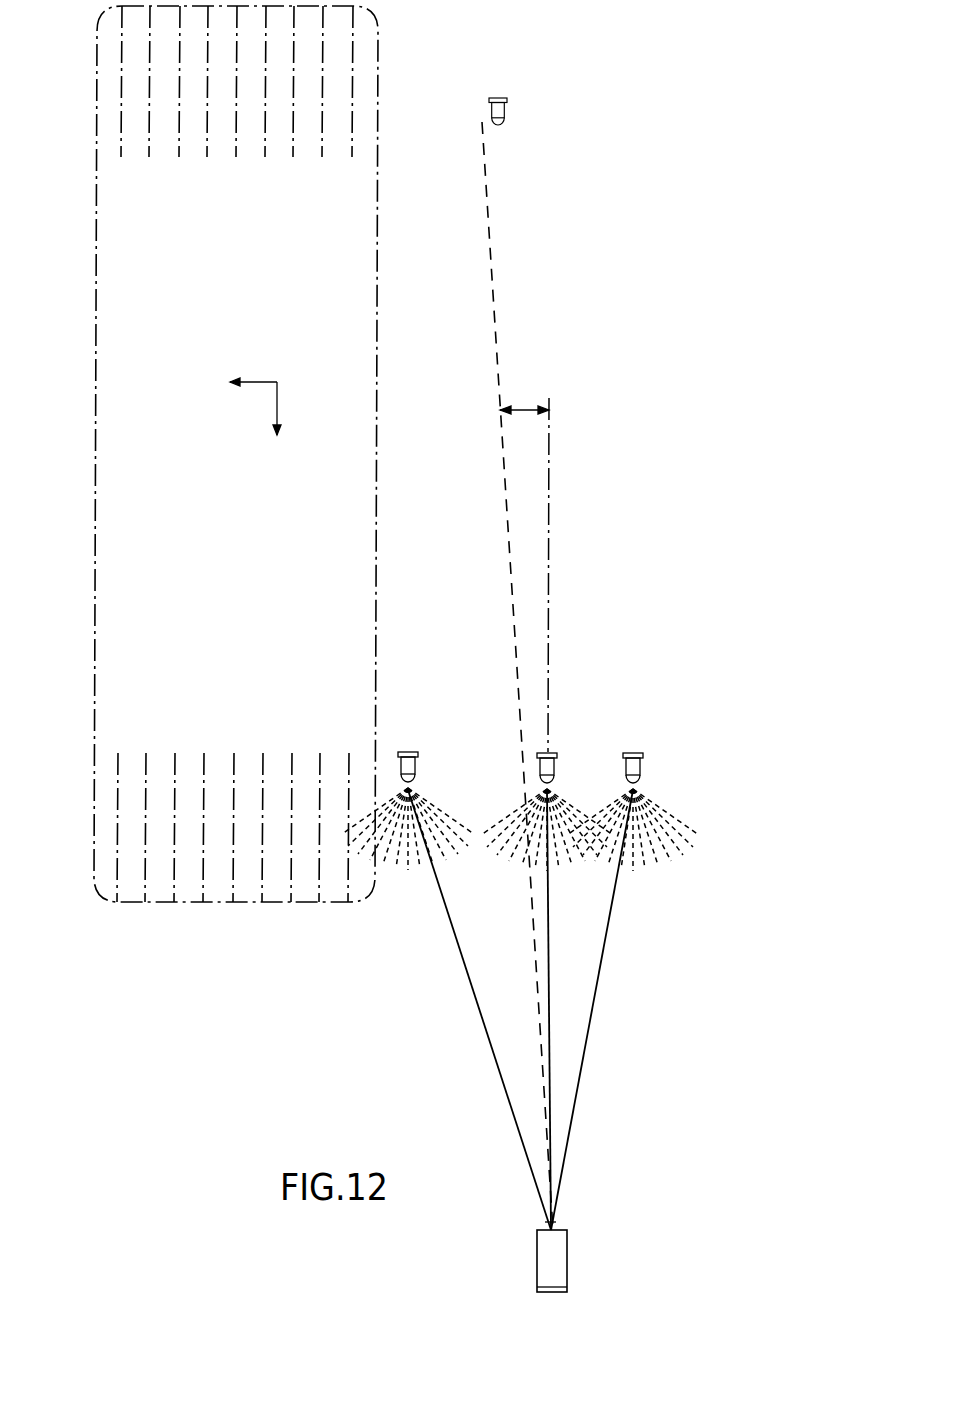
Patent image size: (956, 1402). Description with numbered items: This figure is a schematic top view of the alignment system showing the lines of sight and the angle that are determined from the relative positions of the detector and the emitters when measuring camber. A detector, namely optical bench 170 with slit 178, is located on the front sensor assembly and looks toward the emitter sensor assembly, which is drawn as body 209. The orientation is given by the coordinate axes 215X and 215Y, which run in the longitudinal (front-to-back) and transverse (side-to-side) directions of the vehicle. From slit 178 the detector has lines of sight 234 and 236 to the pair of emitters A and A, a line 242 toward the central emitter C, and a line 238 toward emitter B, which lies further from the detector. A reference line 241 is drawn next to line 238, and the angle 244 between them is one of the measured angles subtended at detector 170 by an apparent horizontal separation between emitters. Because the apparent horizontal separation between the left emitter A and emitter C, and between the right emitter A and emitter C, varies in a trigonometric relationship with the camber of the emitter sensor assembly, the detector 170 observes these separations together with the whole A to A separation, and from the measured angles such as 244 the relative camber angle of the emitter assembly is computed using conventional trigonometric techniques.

The substrate / wafer holder 209 is at (93, 631).
The longitudinal coordinate axis 215X is at (278, 404).
The transverse coordinate axis 215Y is at (260, 381).
The line of sight to nozzle B 238 is at (506, 513).
The vertical reference line 241 is at (551, 568).
The subtended angle 244 is at (526, 408).
The line of sight to nozzle C 242 is at (550, 926).
The line of sight 234 is at (483, 1015).
The line of sight 236 is at (595, 1025).
The optical bench 170 is at (568, 1265).
The slit 178 is at (548, 1228).
The emitter A is at (410, 750).
The emitter B is at (497, 96).
The emitter C is at (548, 752).